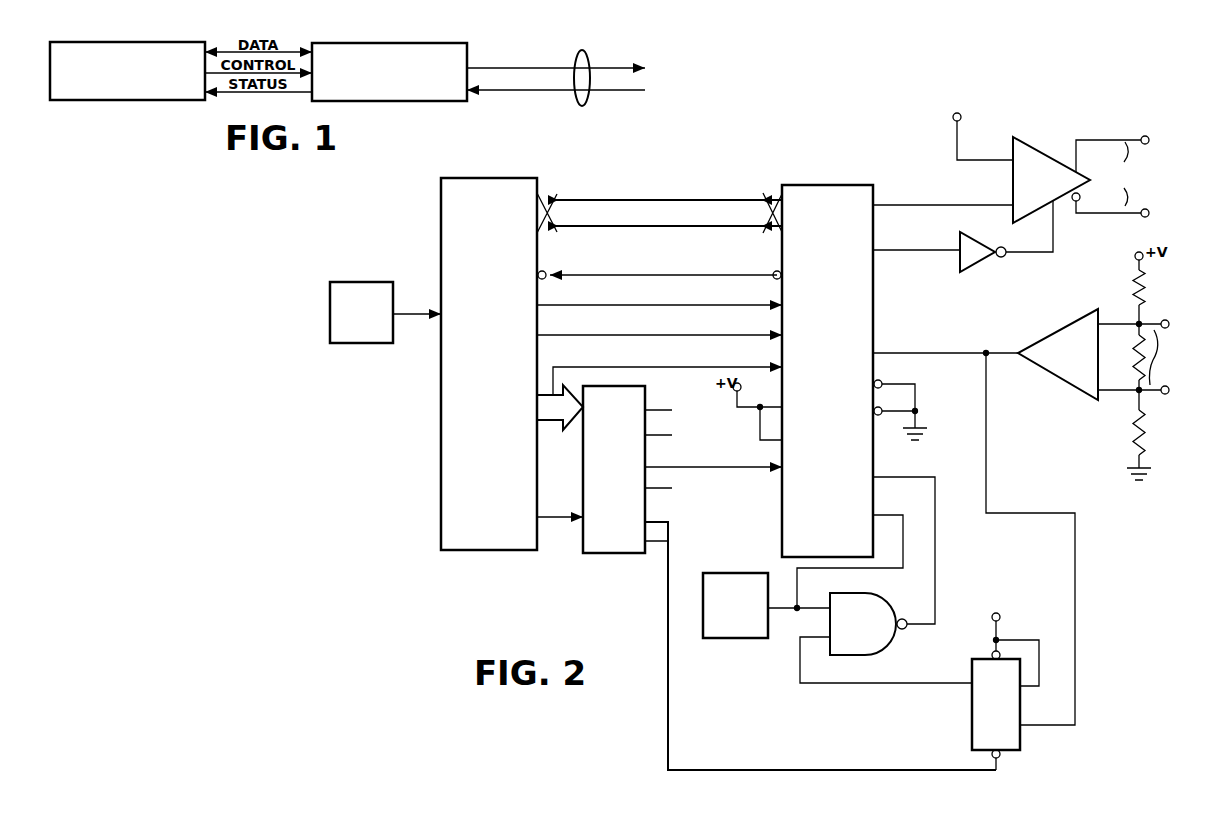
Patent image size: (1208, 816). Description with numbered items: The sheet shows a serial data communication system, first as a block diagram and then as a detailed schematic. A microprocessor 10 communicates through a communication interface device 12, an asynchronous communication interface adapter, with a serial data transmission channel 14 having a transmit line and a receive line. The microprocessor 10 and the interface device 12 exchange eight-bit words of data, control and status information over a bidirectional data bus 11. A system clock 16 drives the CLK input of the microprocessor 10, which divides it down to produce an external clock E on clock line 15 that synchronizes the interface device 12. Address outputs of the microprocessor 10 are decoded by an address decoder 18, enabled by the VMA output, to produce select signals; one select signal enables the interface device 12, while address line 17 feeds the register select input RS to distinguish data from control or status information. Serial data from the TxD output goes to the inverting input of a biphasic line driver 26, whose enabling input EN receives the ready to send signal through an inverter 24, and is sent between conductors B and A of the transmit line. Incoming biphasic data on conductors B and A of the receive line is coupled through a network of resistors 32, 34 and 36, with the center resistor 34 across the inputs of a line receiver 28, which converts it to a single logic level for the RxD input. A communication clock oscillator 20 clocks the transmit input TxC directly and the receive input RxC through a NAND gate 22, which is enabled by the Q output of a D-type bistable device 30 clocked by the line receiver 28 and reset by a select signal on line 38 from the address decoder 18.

In FIG. 1, the microprocessor 10 is at (57, 48).
In FIG. 2, the microprocessor 10 is at (455, 183).
In FIG. 2, the data bus 11 is at (642, 200).
In FIG. 1, the communication interface device 12 is at (455, 55).
In FIG. 2, the communication interface device 12 is at (873, 190).
In FIG. 1, the serial data transmission channel 14 is at (590, 60).
In FIG. 2, the serial data transmission channel 14 is at (1176, 333).
In FIG. 2, the clock line 15 is at (640, 304).
In FIG. 2, the system clock 16 is at (334, 288).
In FIG. 2, the signal line 17 is at (680, 368).
In FIG. 2, the address decoder 18 is at (585, 552).
In FIG. 2, the communication clock oscillator 20 is at (709, 578).
In FIG. 2, the NAND gate 22 is at (878, 647).
In FIG. 2, the inverter 24 is at (980, 262).
In FIG. 2, the line driver 26 is at (1032, 152).
In FIG. 2, the line receiver 28 is at (1060, 386).
In FIG. 2, the bistable device 30 is at (1012, 748).
In FIG. 2, the resistor 32 is at (1146, 286).
In FIG. 2, the center resistor 34 is at (1133, 359).
In FIG. 2, the resistor 36 is at (1147, 441).
In FIG. 2, the select line 38 is at (760, 770).